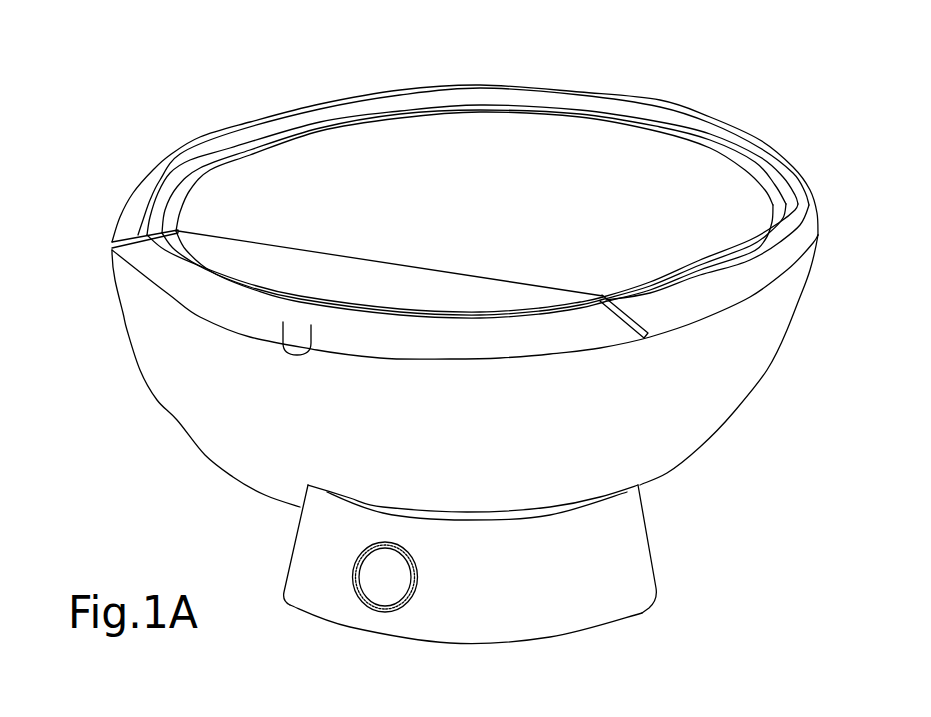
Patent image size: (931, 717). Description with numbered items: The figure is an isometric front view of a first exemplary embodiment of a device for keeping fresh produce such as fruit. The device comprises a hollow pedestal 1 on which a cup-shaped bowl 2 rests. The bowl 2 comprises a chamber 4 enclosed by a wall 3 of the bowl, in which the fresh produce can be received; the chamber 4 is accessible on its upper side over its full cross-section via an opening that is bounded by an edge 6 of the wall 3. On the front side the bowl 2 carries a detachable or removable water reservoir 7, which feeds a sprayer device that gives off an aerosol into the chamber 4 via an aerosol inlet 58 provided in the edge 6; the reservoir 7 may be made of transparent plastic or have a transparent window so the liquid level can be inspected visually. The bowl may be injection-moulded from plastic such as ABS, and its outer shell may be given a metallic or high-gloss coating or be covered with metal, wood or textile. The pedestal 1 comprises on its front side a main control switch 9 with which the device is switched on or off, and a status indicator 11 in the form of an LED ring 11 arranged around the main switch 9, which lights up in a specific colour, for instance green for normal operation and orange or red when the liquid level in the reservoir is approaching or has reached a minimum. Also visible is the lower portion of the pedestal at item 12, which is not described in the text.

The hollow pedestal 1 is at (275, 562).
The cup-shaped bowl 2 is at (115, 390).
The wall 3 is at (200, 410).
The chamber 4 is at (562, 160).
The edge 6 is at (722, 127).
The water reservoir 7 is at (318, 268).
The main control switch 9 is at (373, 585).
The status indicator 11 is at (410, 597).
The base bottom 12 is at (547, 643).
The aerosol inlet 58 is at (347, 122).